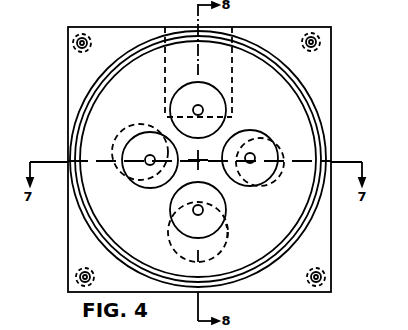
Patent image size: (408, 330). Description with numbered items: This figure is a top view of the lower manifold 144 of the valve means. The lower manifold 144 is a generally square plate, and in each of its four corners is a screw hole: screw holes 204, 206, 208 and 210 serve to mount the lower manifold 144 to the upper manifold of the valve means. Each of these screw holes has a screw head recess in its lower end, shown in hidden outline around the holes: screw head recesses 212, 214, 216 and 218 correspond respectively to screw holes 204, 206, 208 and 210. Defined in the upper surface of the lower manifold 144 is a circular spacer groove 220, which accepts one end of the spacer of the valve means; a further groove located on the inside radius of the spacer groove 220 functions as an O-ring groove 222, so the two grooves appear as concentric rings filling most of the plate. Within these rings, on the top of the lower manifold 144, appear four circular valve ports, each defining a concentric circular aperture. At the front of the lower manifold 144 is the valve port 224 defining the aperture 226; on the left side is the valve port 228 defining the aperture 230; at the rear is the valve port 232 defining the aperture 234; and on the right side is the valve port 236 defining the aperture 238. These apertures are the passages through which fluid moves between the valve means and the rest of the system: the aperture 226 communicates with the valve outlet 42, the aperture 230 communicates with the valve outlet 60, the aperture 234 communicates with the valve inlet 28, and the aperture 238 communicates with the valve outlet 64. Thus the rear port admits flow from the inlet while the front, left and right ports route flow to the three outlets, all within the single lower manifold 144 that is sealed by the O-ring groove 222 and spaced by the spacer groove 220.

The valve inlet 28 is at (166, 72).
The valve outlet 42 is at (227, 245).
The valve outlet 60 is at (115, 166).
The valve outlet 64 is at (283, 160).
The lower manifold 144 is at (322, 90).
The screw hole 204 is at (84, 36).
The screw hole 206 is at (306, 41).
The screw hole 208 is at (92, 278).
The screw hole 210 is at (308, 276).
The screw head recess 212 is at (79, 36).
The screw head recess 214 is at (323, 41).
The screw head recess 216 is at (78, 274).
The screw head recess 218 is at (326, 274).
The spacer groove 220 is at (80, 124).
The O-ring groove 222 is at (92, 110).
The valve port 224 is at (178, 201).
The aperture 226 is at (183, 232).
The valve port 228 is at (147, 132).
The aperture 230 is at (150, 157).
The valve port 232 is at (227, 120).
The aperture 234 is at (199, 108).
The valve port 236 is at (245, 130).
The aperture 238 is at (252, 157).